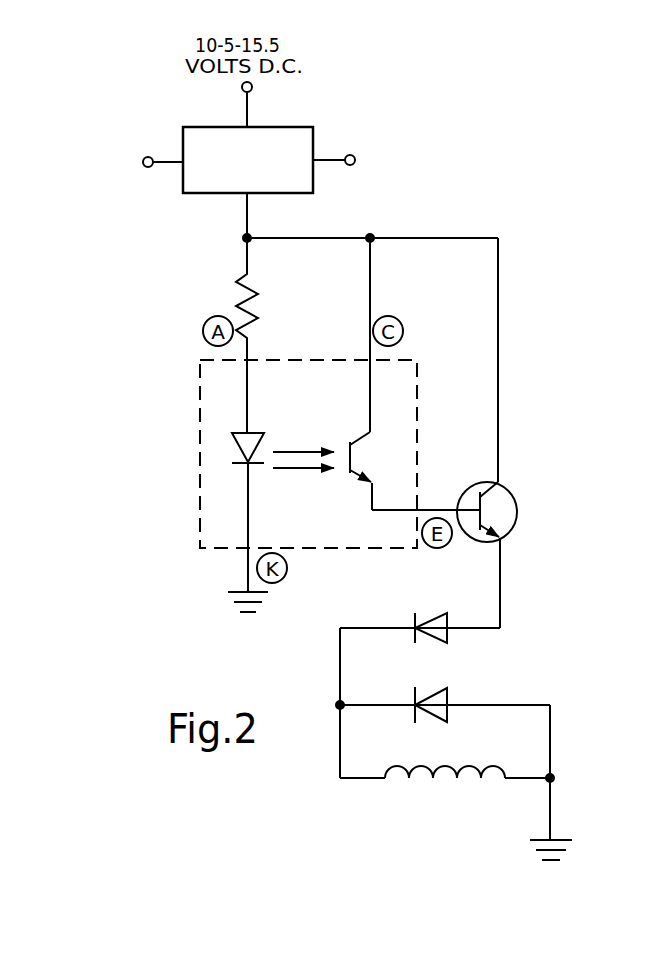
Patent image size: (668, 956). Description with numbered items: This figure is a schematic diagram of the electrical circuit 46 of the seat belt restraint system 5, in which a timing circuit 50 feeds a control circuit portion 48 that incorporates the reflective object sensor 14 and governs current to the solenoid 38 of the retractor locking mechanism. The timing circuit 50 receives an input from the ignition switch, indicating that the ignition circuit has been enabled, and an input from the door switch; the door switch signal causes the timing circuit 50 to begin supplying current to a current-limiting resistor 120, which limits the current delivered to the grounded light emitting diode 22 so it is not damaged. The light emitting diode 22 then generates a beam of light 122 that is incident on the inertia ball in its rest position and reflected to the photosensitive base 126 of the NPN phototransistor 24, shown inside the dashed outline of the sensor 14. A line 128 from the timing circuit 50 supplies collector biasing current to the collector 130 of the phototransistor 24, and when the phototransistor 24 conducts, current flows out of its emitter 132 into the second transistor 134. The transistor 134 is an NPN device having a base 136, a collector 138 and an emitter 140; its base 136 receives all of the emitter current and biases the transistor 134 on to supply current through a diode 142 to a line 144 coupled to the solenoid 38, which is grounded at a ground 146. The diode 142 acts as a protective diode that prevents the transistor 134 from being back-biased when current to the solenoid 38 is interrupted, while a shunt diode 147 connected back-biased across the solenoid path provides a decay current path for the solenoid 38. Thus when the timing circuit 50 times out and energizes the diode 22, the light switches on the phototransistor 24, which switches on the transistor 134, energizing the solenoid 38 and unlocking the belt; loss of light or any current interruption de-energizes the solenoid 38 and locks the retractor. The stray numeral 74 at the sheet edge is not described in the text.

The seat belt restraint system 5 is at (152, 109).
The reflective object sensor 14 is at (191, 505).
The light emitting diode 22 is at (229, 414).
The phototransistor 24 is at (389, 414).
The solenoid 38 is at (418, 799).
The electrical circuit 46 is at (416, 94).
The control circuit portion 48 is at (571, 261).
The timing circuit 50 is at (326, 107).
The stray numeral 74 is at (18, 522).
The current-limiting resistor 120 is at (253, 298).
The beam of light 122 is at (290, 450).
The photosensitive base 126 is at (348, 462).
The line 128 is at (290, 238).
The collector 130 is at (362, 444).
The emitter 132 is at (373, 481).
The second transistor 134 is at (510, 530).
The base 136 is at (478, 522).
The collector 138 is at (517, 503).
The emitter 140 is at (485, 540).
The diode 142 is at (447, 643).
The line 144 is at (340, 665).
The ground 146 is at (557, 840).
The shunt diode 147 is at (448, 695).